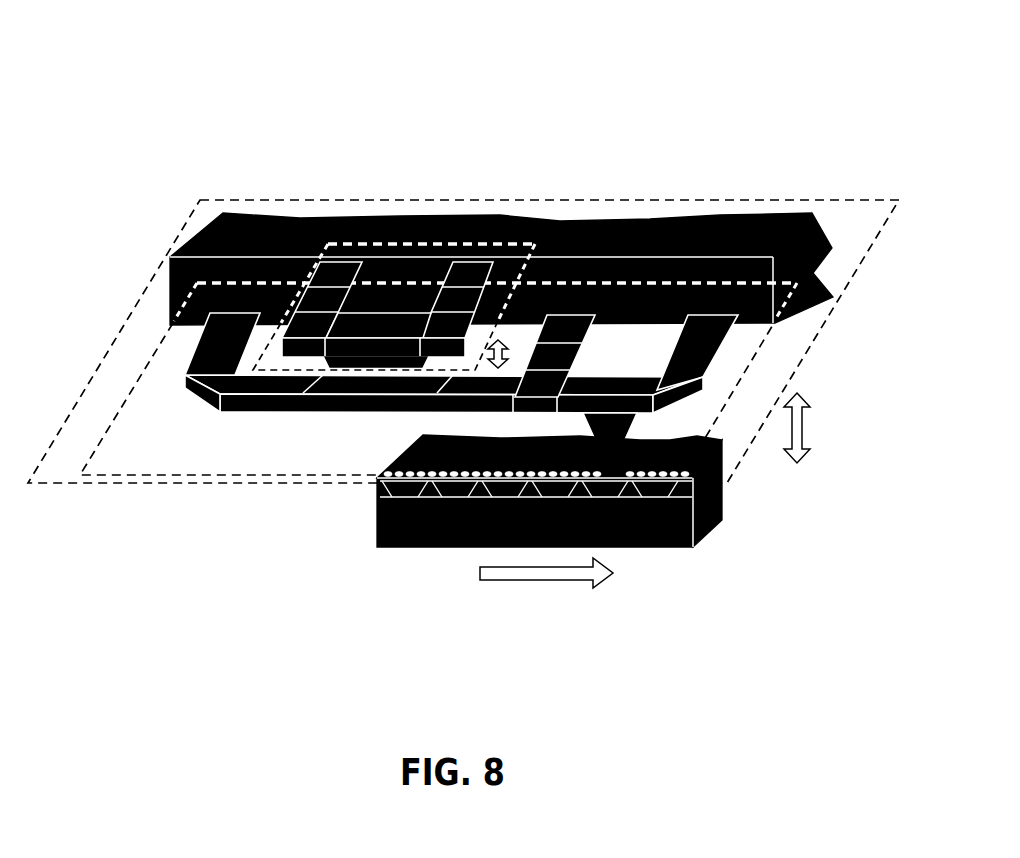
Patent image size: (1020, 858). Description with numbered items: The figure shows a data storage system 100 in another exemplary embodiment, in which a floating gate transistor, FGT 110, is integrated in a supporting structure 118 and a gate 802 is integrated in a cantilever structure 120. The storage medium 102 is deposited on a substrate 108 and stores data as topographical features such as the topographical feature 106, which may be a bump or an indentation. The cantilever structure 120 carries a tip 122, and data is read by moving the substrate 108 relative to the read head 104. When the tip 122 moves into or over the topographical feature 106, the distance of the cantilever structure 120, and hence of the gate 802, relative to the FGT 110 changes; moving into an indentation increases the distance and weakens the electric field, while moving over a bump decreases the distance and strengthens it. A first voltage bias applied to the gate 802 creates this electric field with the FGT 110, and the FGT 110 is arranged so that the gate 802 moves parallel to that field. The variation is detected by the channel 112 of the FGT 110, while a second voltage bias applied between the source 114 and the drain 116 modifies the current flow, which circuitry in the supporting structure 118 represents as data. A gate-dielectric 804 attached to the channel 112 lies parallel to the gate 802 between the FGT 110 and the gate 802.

The data storage system 100 is at (285, 48).
The storage medium 102 is at (503, 457).
The read head 104 is at (463, 341).
The topographical feature 106 is at (650, 497).
The substrate 108 is at (398, 545).
The FGT 110 is at (517, 243).
The channel 112 is at (405, 348).
The source 114 is at (340, 288).
The drain 116 is at (485, 292).
The supporting structure 118 is at (757, 233).
The cantilever structure 120 is at (760, 348).
The tip 122 is at (617, 440).
The gate 802 is at (240, 407).
The gate-dielectric 804 is at (340, 363).